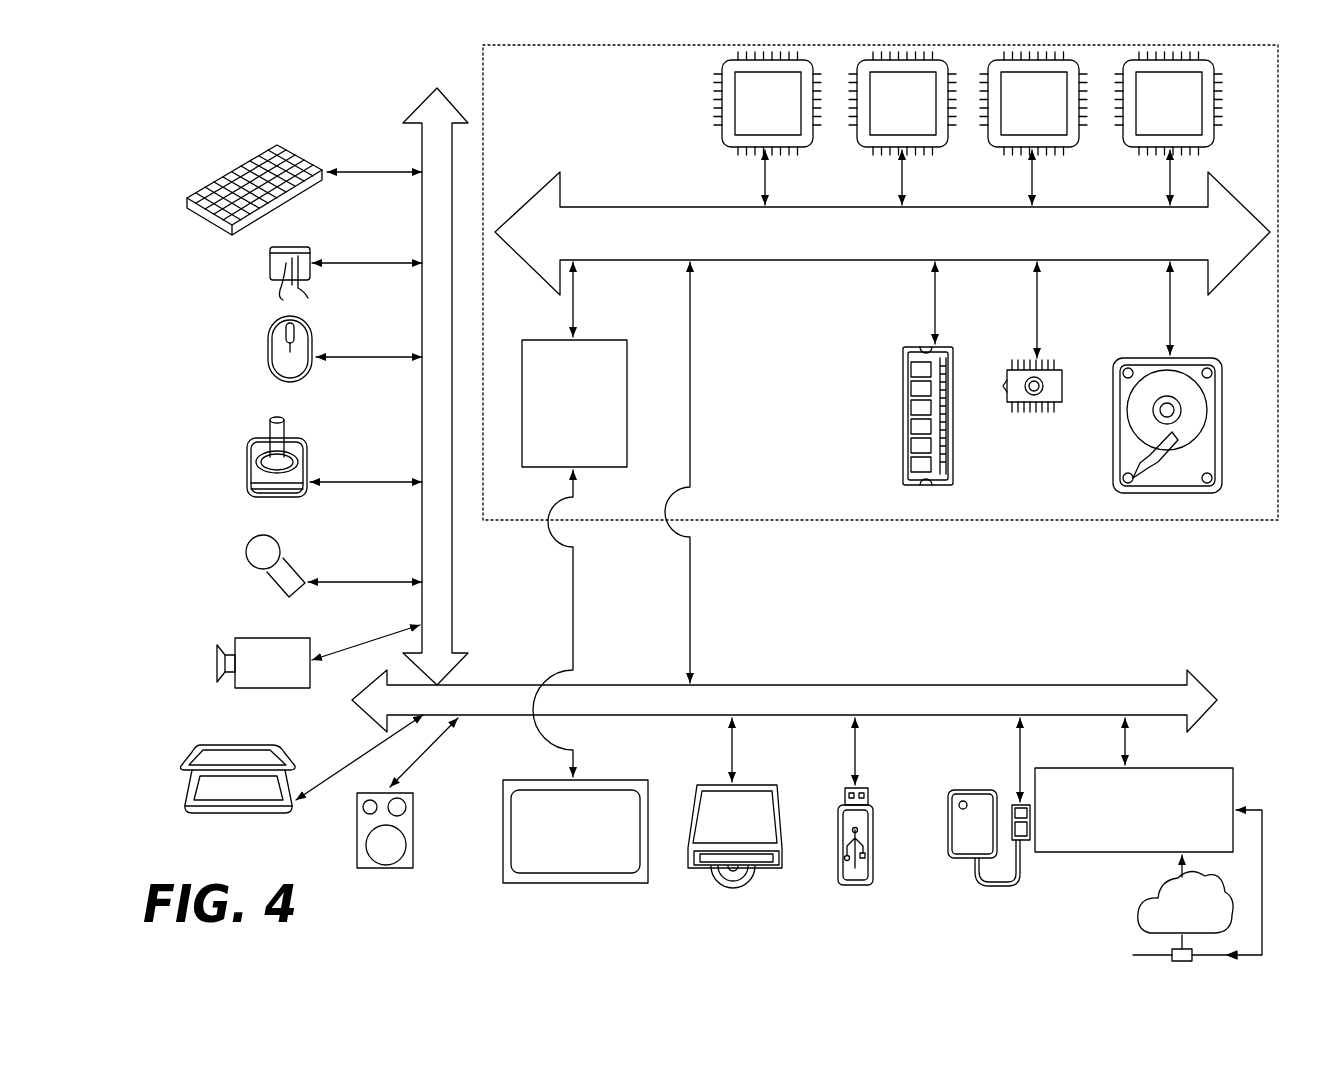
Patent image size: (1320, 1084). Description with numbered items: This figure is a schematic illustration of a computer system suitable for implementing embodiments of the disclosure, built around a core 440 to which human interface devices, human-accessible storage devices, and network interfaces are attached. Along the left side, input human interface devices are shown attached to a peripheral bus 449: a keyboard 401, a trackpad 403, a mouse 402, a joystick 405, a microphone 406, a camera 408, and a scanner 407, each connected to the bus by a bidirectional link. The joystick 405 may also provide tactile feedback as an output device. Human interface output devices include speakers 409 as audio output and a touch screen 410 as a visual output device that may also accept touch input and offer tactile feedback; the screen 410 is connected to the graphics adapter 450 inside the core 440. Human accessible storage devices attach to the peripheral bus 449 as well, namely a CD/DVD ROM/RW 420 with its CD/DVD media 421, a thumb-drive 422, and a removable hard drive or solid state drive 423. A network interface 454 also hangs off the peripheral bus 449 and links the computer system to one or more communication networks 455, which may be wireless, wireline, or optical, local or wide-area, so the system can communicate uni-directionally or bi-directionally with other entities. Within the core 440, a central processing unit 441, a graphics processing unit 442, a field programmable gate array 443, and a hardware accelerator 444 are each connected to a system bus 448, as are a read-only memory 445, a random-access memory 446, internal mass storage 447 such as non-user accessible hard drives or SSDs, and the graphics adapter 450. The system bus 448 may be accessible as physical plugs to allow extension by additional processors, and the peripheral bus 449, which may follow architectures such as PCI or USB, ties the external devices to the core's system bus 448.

The keyboard 401 is at (185, 200).
The mouse 402 is at (268, 348).
The trackpad 403 is at (268, 270).
The joystick 405 is at (246, 480).
The microphone 406 is at (246, 553).
The scanner 407 is at (183, 806).
The camera 408 is at (215, 662).
The speakers 409 is at (384, 868).
The touch screen 410 is at (575, 884).
The CD/DVD ROM/RW 420 is at (778, 868).
The CD/DVD media 421 is at (718, 880).
The thumb-drive 422 is at (855, 886).
The removable hard drive or solid state drive 423 is at (957, 858).
The core 440 is at (870, 520).
The Central Processing Unit 441 is at (784, 126).
The Graphics Processing Unit 442 is at (919, 126).
The Field Programmable Gate Array 443 is at (1050, 126).
The hardware accelerator 444 is at (1184, 126).
The Read-only memory 445 is at (1030, 412).
The Random-access memory 446 is at (903, 447).
The internal mass storage 447 is at (1127, 358).
The system bus 448 is at (952, 245).
The peripheral bus 449 is at (422, 135).
The graphics adapter 450 is at (589, 443).
The network interface 454 is at (1148, 835).
The communication networks 455 is at (1140, 920).